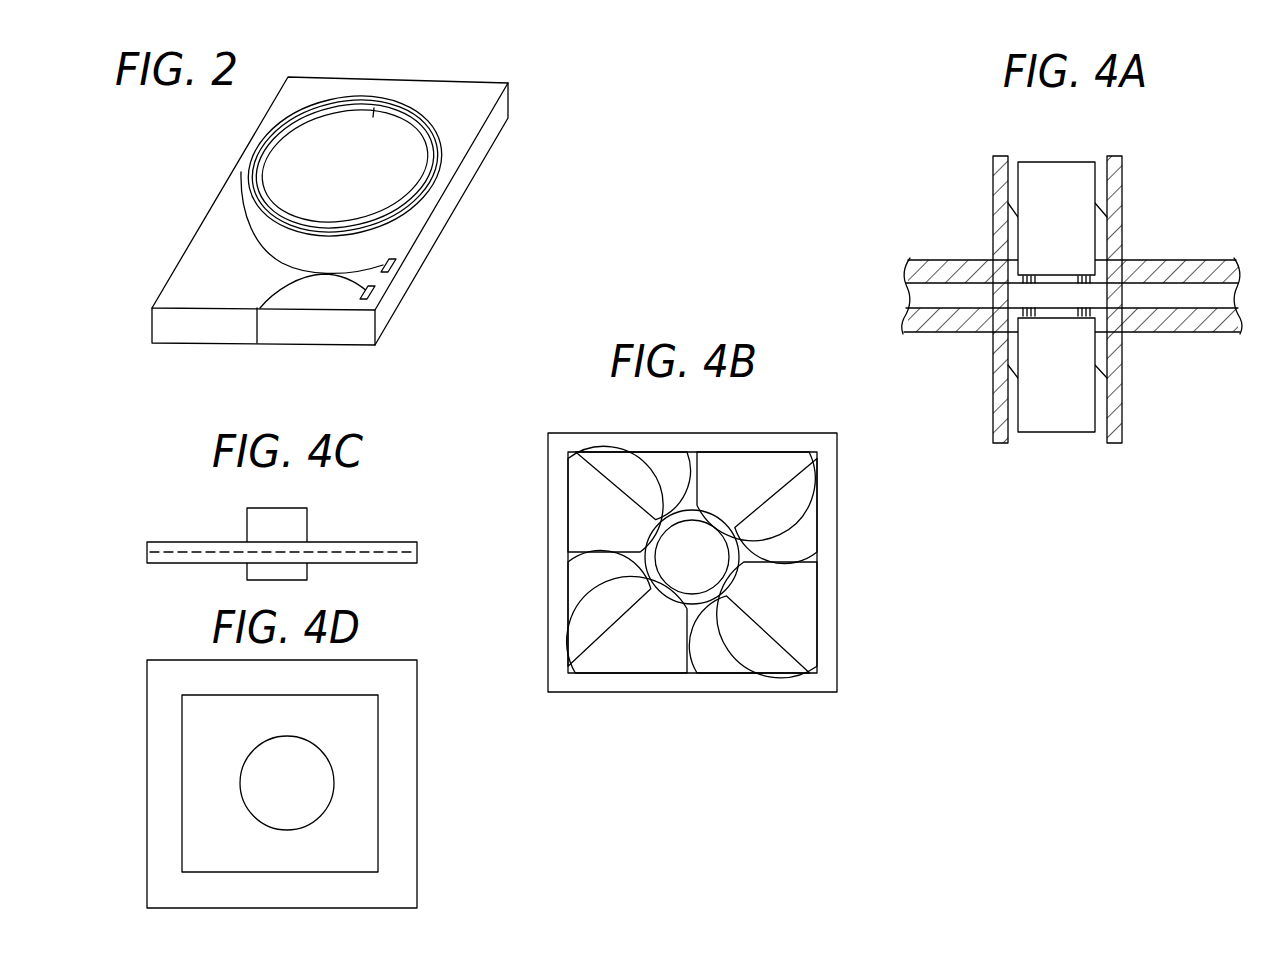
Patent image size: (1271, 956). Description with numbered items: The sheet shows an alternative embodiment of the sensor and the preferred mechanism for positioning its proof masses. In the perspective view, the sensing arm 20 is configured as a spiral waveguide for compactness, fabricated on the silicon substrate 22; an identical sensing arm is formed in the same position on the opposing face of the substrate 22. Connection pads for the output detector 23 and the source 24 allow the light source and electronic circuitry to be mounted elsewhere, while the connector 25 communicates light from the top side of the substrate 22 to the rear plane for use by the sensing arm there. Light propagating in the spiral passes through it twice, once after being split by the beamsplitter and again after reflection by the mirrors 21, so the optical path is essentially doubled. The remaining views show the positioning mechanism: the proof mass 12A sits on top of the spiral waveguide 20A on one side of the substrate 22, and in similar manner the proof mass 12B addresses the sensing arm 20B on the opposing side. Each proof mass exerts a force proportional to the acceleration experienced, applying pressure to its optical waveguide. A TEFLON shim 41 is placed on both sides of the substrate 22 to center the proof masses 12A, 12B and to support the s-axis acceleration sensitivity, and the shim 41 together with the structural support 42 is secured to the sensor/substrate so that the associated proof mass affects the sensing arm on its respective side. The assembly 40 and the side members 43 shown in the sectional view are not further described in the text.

In FIG. 4A, the proof mass 12A is at (1058, 167).
In FIG. 4B, the proof mass 12A is at (697, 542).
In FIG. 4C, the proof mass 12A is at (247, 517).
In FIG. 4A, the proof mass 12B is at (1082, 432).
In FIG. 2, the sensing arm 20 is at (283, 119).
In FIG. 4A, the spiral waveguide 20A is at (1017, 280).
In FIG. 4A, the sensing arm 20B is at (1017, 315).
In FIG. 2, the mirrors 21 is at (382, 113).
In FIG. 2, the silicon substrate 22 is at (488, 130).
In FIG. 4A, the silicon substrate 22 is at (957, 282).
In FIG. 2, the output detector 23 is at (394, 262).
In FIG. 2, the source 24 is at (374, 293).
In FIG. 2, the connector 25 is at (250, 333).
In FIG. 4A, the magnet holder assembly 40 is at (1069, 299).
In FIG. 4C, the TEFLON shim 41 is at (418, 545).
In FIG. 4D, the TEFLON shim 41 is at (418, 812).
In FIG. 4B, the structural support 42 is at (838, 612).
In FIG. 4A, the side wall 43 is at (993, 200).